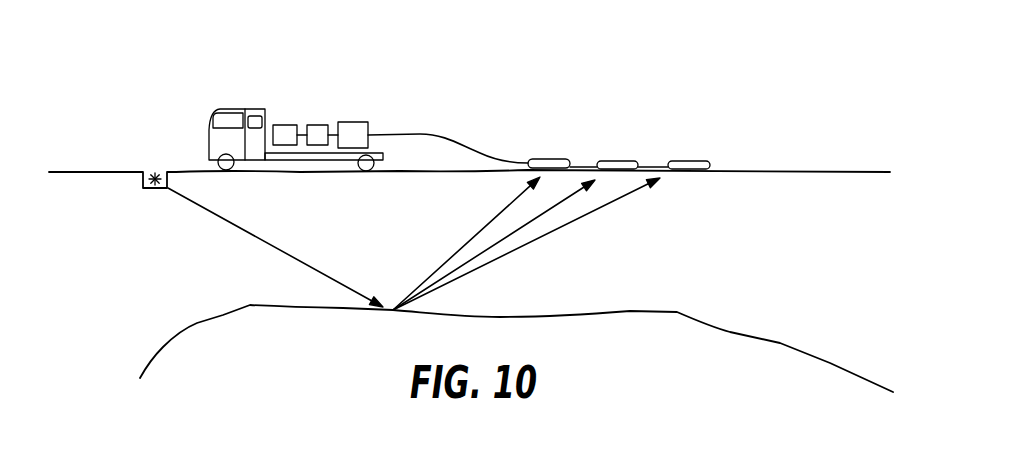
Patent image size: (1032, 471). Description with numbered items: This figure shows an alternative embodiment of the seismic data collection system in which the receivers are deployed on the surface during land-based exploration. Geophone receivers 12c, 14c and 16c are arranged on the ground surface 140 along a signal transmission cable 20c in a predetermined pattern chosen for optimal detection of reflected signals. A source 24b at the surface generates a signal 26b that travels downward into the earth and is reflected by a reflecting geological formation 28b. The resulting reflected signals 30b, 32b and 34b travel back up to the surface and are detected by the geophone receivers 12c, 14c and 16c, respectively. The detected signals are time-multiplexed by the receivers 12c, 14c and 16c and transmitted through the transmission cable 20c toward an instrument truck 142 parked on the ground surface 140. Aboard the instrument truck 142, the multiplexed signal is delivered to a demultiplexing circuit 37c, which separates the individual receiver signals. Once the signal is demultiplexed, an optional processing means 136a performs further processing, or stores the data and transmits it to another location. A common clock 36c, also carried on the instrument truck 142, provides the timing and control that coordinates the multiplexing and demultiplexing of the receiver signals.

The ground surface 140 is at (98, 171).
The source 24b is at (153, 170).
The instrument truck 142 is at (222, 110).
The optional processing means 136a is at (289, 118).
The demultiplexing circuit 37c is at (312, 125).
The common clock 36c is at (357, 123).
The signal transmission cable 20c is at (422, 133).
The geophone receiver 16c is at (544, 159).
The geophone receiver 14c is at (610, 161).
The geophone receiver 12c is at (682, 161).
The signal 26b is at (254, 236).
The reflected signal 34b is at (513, 201).
The reflected signal 32b is at (565, 199).
The reflected signal 30b is at (625, 196).
The reflecting geological formation 28b is at (202, 320).